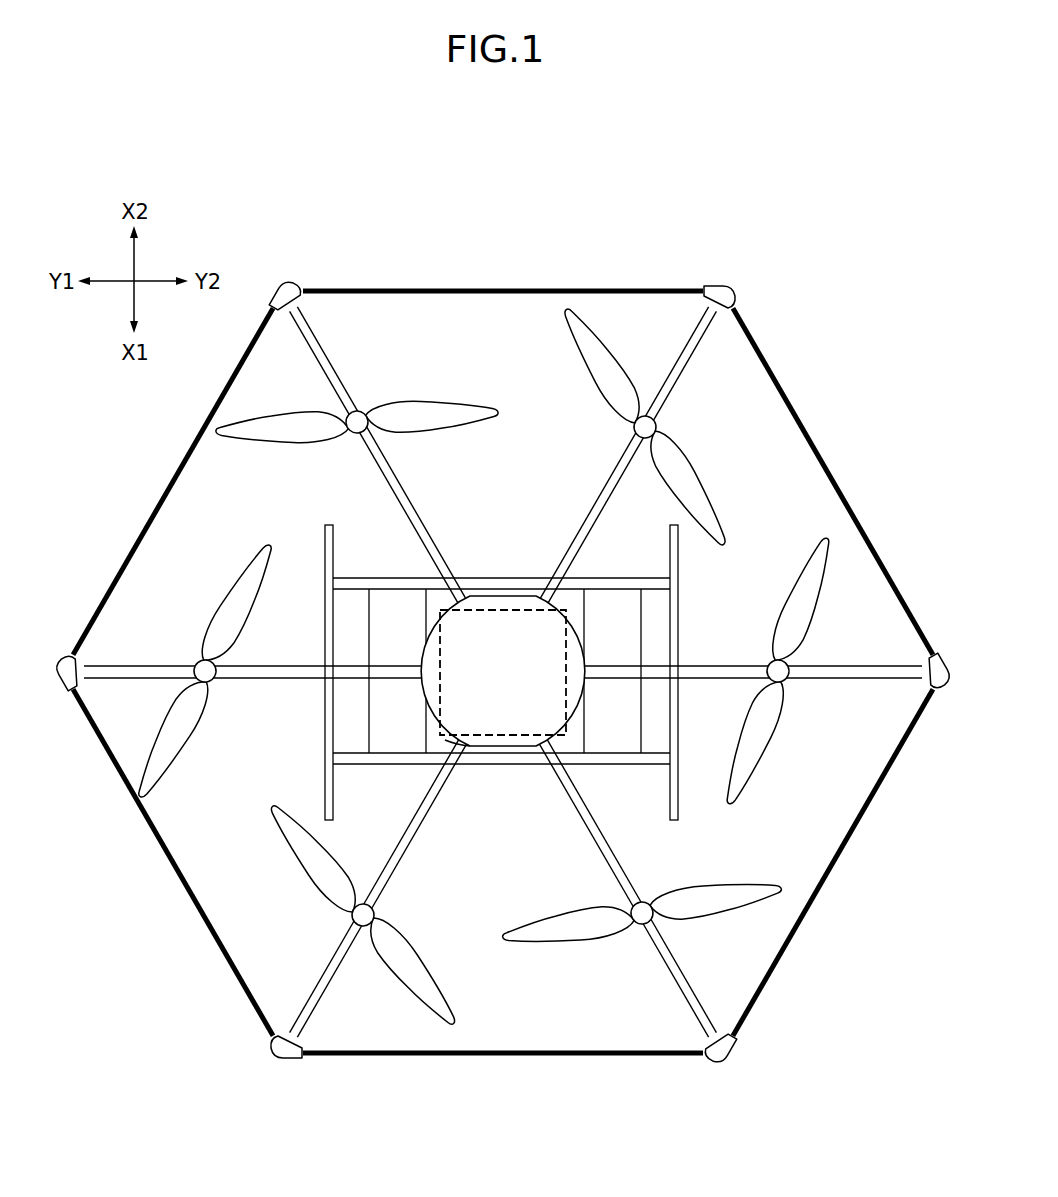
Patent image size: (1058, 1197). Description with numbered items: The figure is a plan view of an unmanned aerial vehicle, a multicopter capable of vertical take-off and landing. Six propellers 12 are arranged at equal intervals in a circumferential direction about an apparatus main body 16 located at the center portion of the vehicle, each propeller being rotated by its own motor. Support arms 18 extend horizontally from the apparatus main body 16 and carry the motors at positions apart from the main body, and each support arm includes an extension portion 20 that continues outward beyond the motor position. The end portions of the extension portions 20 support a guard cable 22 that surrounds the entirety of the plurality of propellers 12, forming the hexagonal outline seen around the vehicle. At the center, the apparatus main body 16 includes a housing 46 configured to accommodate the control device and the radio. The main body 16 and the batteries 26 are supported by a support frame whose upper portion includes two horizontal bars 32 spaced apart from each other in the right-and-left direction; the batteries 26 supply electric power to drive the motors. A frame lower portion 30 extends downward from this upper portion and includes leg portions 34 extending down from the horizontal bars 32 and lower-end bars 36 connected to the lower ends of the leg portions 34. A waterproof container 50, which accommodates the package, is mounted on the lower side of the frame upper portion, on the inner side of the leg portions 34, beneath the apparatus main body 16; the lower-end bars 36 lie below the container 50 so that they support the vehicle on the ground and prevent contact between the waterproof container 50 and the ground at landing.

The propeller 12 is at (408, 408).
The apparatus main body 16 is at (518, 593).
The support arm 18 is at (600, 498).
The extension portion 20 is at (317, 340).
The guard cable 22 is at (445, 290).
The battery 26 is at (392, 748).
The frame lower portion 30 is at (497, 681).
The horizontal bar 32 is at (503, 585).
The leg portion 34 is at (347, 764).
The lower-end bar 36 is at (678, 620).
The housing 46 is at (478, 600).
The waterproof container 50 is at (480, 737).